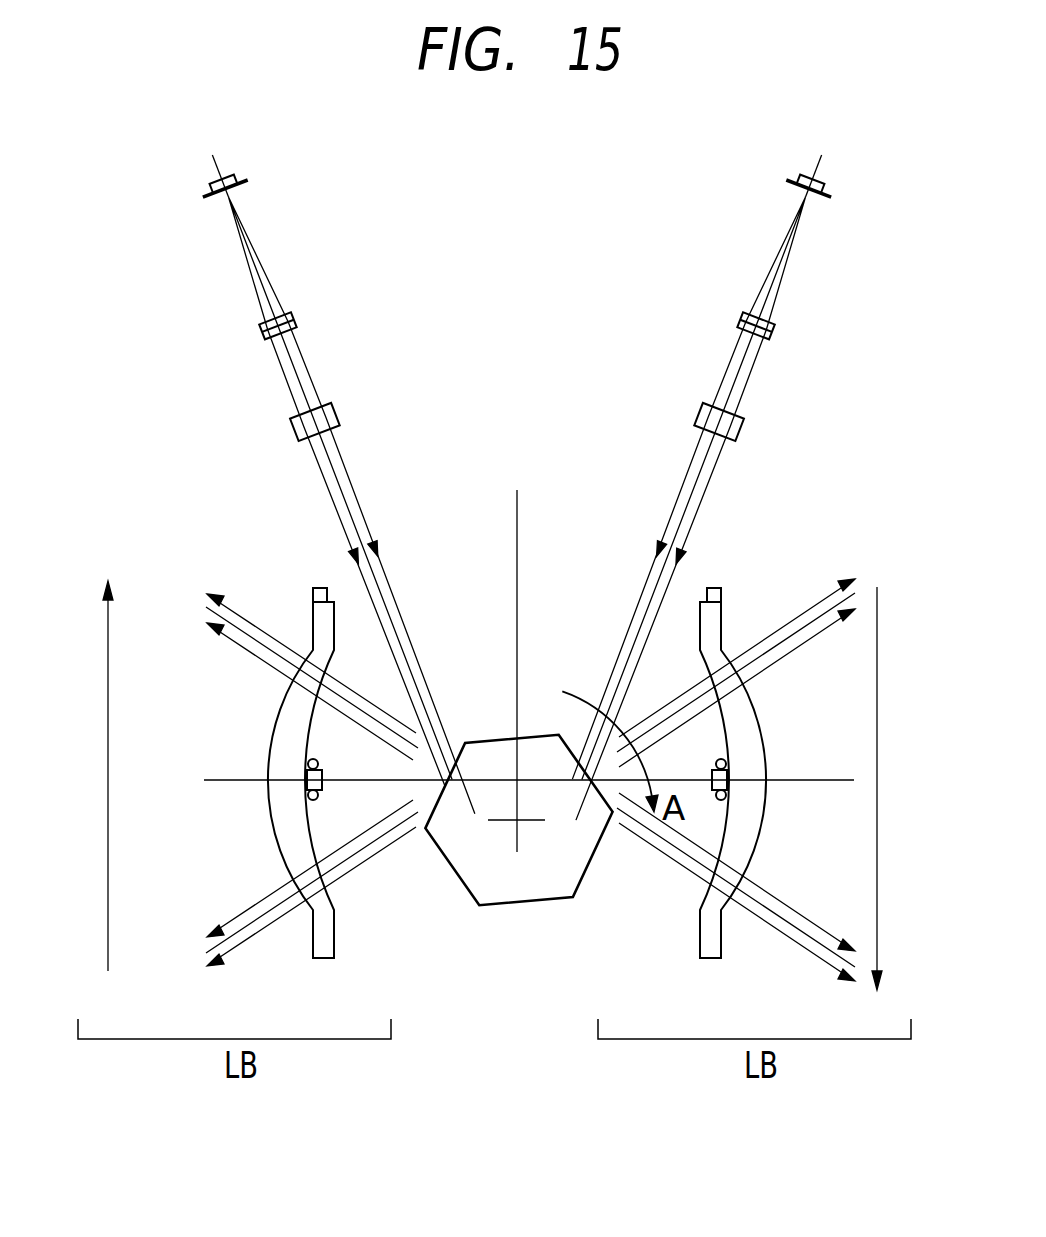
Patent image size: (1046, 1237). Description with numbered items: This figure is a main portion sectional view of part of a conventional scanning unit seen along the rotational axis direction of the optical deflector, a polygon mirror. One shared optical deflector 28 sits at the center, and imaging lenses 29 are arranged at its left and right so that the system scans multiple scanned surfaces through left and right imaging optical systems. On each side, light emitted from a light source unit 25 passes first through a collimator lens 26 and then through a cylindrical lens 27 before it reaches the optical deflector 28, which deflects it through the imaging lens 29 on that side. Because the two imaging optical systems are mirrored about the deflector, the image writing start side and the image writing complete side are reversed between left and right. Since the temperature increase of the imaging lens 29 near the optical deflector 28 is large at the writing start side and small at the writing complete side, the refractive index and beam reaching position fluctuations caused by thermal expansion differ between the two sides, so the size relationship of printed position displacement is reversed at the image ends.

The light source unit 25 is at (236, 178).
The collimator lens 26 is at (297, 317).
The cylindrical lens 27 is at (336, 414).
The optical deflector 28 is at (502, 883).
The imaging lens 29 is at (323, 945).